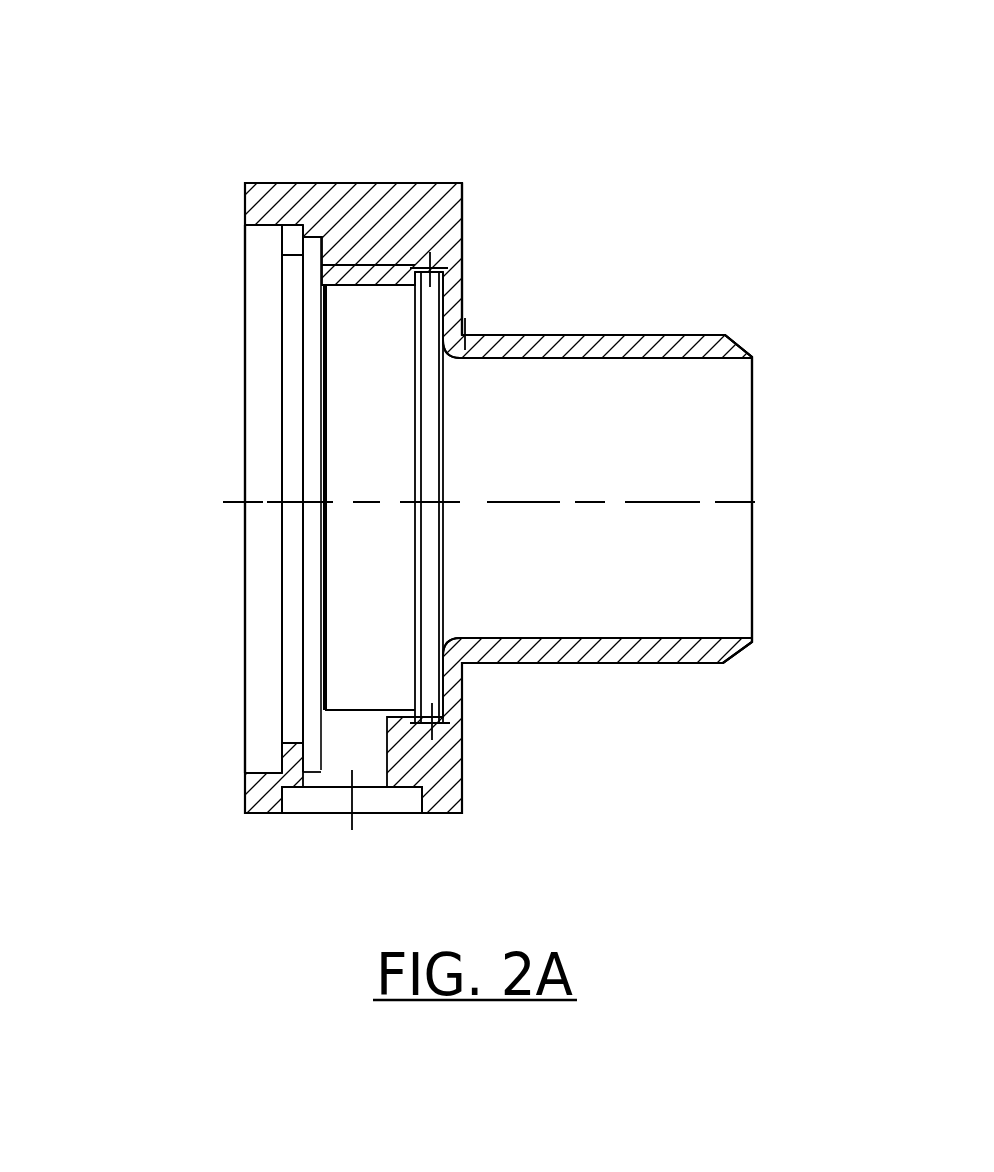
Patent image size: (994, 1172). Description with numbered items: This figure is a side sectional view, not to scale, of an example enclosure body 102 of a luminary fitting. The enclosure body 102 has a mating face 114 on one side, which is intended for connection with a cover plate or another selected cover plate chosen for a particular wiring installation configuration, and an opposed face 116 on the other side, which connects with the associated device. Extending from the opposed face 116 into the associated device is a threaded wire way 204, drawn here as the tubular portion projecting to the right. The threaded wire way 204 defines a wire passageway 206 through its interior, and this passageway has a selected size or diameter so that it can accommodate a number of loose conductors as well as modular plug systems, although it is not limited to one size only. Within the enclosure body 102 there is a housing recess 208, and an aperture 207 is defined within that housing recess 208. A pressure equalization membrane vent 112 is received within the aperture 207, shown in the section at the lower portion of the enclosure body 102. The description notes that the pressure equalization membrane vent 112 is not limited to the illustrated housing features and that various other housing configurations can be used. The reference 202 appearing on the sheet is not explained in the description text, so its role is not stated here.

The enclosure body 102 is at (534, 60).
The housing cap 202 is at (371, 167).
The mating face 114 is at (227, 195).
The opposed face 116 is at (480, 230).
The housing recess 208 is at (409, 296).
The wire passageway 206 is at (691, 382).
The threaded wire way 204 is at (610, 682).
The aperture 207 is at (395, 832).
The pressure equalization membrane vent 112 is at (314, 823).